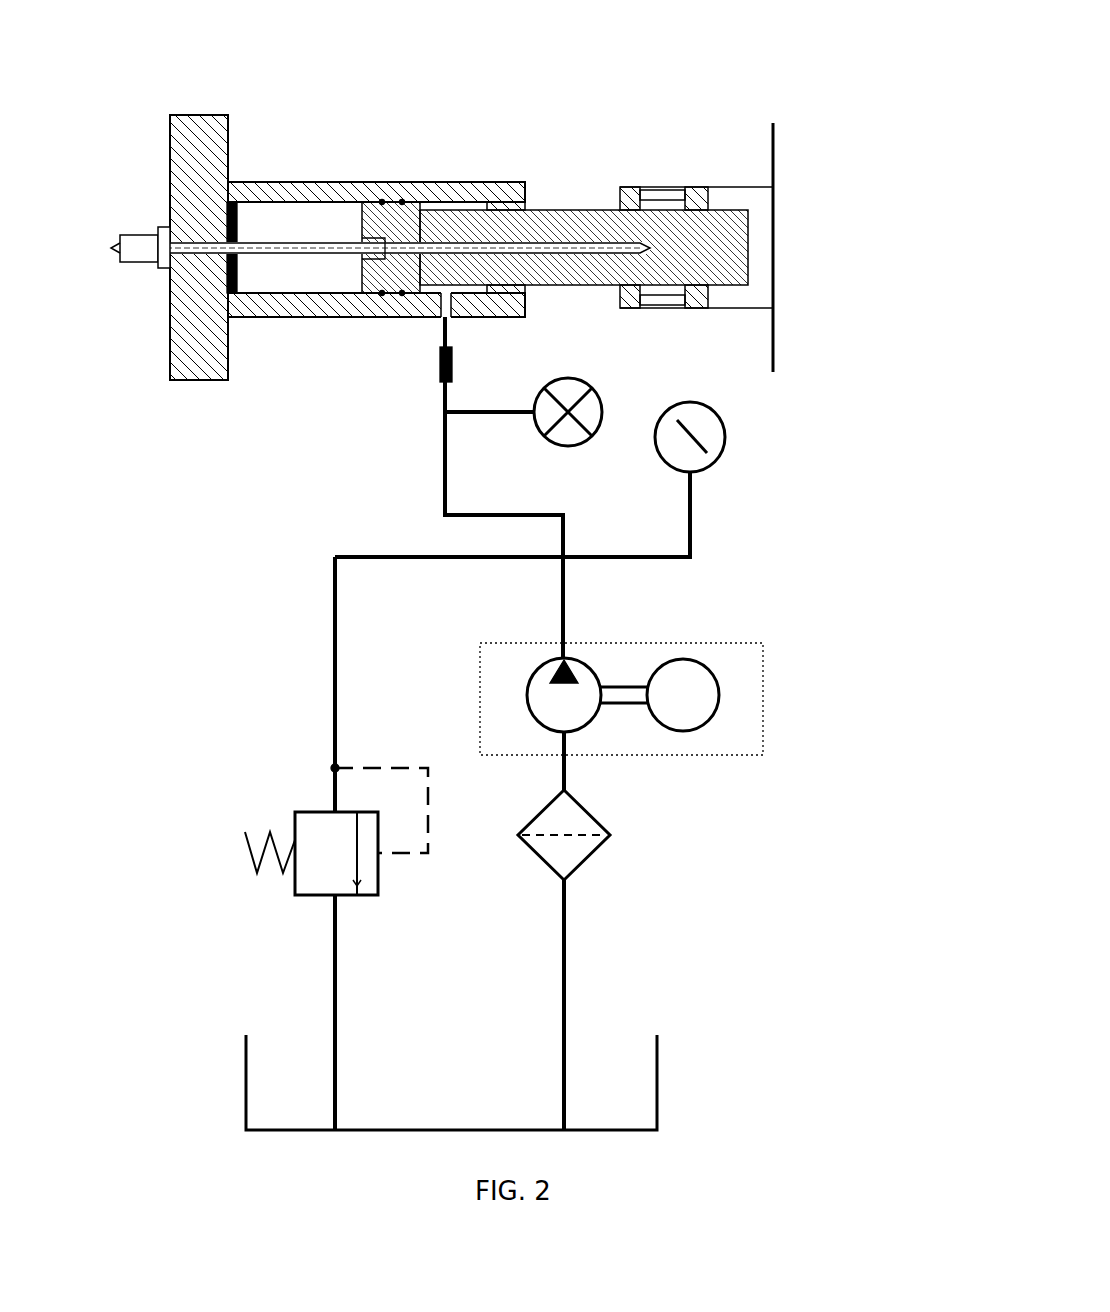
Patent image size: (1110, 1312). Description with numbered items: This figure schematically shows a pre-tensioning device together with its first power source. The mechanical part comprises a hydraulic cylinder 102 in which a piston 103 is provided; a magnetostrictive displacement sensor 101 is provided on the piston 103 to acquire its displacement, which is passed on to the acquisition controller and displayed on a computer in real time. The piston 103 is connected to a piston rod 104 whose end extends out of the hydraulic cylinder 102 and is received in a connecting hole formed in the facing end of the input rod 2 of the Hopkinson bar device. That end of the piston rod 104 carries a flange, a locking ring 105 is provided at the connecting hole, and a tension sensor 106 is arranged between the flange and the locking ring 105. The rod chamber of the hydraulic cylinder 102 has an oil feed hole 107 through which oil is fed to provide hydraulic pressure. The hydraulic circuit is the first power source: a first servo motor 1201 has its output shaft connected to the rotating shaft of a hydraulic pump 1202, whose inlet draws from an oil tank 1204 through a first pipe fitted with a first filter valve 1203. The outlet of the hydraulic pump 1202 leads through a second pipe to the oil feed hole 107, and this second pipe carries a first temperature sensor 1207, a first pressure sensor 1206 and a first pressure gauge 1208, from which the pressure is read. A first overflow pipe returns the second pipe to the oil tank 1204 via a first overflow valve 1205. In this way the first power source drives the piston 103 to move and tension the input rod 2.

The input rod 2 is at (753, 297).
The magnetostrictive displacement sensor 101 is at (117, 245).
The hydraulic cylinder 102 is at (247, 202).
The piston 103 is at (373, 240).
The piston rod 104 is at (728, 218).
The locking ring 105 is at (632, 192).
The tension sensor 106 is at (673, 195).
The oil feed hole 107 is at (440, 303).
The first servo motor 1201 is at (720, 698).
The hydraulic pump 1202 is at (580, 680).
The first filter valve 1203 is at (610, 838).
The oil tank 1204 is at (657, 1083).
The first overflow valve 1205 is at (308, 808).
The first pressure sensor 1206 is at (537, 427).
The first temperature sensor 1207 is at (443, 383).
The first pressure gauge 1208 is at (725, 445).